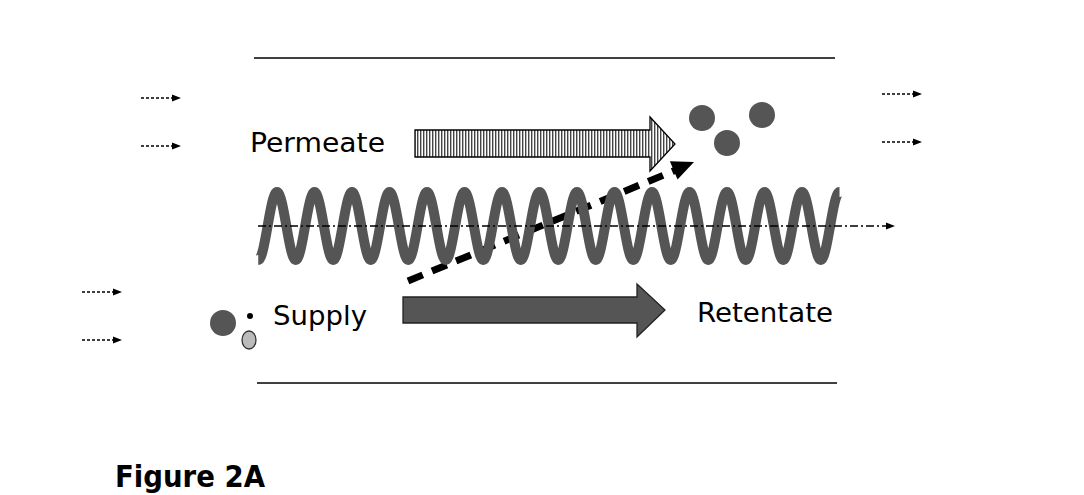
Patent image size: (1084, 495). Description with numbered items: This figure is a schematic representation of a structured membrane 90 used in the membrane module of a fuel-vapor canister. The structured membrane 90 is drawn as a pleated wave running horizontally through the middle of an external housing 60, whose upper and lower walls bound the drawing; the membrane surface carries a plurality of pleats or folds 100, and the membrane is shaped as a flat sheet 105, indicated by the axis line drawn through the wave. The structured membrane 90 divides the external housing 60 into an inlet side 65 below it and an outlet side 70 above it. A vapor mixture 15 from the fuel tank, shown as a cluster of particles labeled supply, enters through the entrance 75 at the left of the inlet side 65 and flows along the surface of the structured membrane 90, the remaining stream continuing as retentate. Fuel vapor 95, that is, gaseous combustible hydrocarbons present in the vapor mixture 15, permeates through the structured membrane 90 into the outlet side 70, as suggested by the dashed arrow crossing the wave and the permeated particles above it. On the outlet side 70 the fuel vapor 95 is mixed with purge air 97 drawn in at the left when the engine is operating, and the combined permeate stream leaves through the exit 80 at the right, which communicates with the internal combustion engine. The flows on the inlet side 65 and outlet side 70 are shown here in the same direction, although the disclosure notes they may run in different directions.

The vapor mixture 15 is at (243, 318).
The external housing 60 is at (631, 56).
The inlet side 65 is at (534, 328).
The outlet side 70 is at (545, 129).
The entrance 75 is at (82, 316).
The exit 80 is at (921, 118).
The structured membrane 90 is at (248, 190).
The fuel vapor 95 is at (730, 118).
The purge air 97 is at (142, 122).
The pleats or folds 100 is at (787, 205).
The flat sheet 105 is at (604, 228).